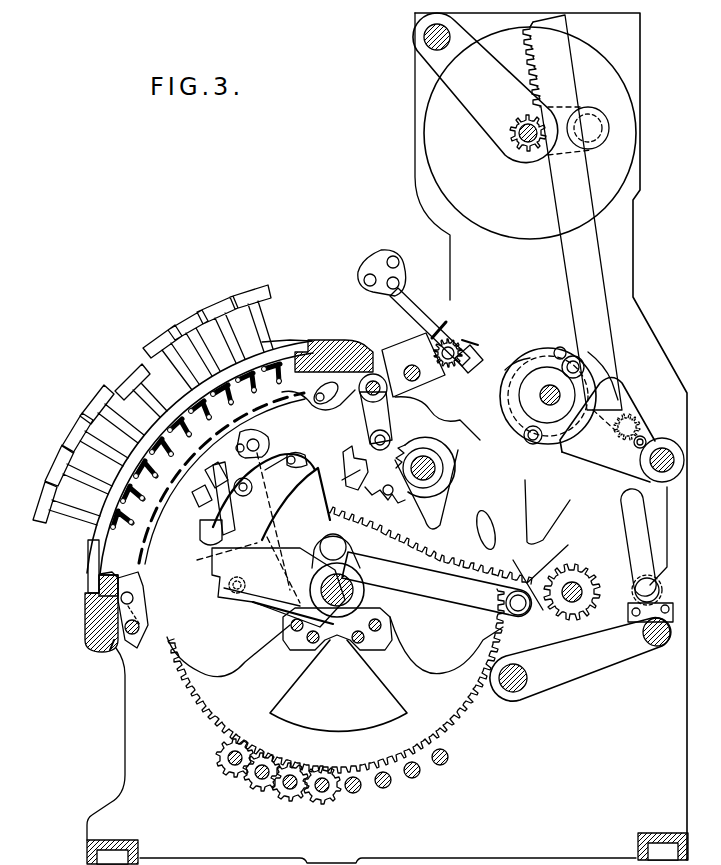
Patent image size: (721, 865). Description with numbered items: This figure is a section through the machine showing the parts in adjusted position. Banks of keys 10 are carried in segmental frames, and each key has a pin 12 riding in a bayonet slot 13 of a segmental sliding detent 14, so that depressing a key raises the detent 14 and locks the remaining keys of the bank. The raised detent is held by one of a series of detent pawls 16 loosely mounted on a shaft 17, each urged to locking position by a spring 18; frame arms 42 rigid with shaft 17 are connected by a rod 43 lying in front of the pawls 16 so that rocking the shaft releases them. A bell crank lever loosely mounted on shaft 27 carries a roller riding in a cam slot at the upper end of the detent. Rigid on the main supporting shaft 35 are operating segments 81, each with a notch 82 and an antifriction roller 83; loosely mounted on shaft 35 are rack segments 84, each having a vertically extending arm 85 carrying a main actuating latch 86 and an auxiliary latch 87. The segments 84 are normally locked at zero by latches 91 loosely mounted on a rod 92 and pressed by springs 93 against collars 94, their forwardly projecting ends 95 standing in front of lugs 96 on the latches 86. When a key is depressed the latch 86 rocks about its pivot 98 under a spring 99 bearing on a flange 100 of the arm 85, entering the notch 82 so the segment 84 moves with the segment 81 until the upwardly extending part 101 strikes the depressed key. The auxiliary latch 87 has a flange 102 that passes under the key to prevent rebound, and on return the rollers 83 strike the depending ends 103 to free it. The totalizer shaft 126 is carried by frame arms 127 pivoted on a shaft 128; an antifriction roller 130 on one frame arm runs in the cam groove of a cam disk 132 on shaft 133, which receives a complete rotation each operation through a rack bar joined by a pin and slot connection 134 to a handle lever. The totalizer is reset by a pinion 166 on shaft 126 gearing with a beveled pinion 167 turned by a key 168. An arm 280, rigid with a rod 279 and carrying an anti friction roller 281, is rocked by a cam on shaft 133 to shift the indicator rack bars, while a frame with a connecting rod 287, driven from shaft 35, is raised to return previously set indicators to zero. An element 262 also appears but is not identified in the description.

The banks of keys 10 is at (125, 373).
The pin 12 is at (268, 346).
The bayonet slot 13 is at (303, 348).
The segmental sliding detent 14 is at (118, 559).
The detent pawls 16 is at (144, 598).
The shaft 17 is at (137, 633).
The spring 18 is at (112, 648).
The shaft 27 is at (365, 398).
The main supporting shaft 35 is at (337, 606).
The frame arms 42 is at (122, 608).
The rod 43 is at (110, 590).
The operating segments 81 is at (278, 606).
The notch 82 is at (213, 590).
The antifriction roller 83 is at (245, 586).
The rack segments 84 is at (392, 688).
The vertically extending arm 85 is at (345, 520).
The main actuating latch 86 is at (278, 458).
The auxiliary latch 87 is at (196, 498).
The latches 91 is at (415, 442).
The rod 92 is at (424, 480).
The springs 93 is at (340, 482).
The collars 94 is at (368, 484).
The forwardly projecting ends 95 is at (350, 457).
The lugs 96 is at (305, 458).
The pivot 98 is at (252, 490).
The spring 99 is at (204, 532).
The flange 100 is at (202, 518).
The upwardly extending part 101 is at (260, 438).
The flange 102 is at (210, 478).
The depending ends 103 is at (215, 558).
The totalizer shaft 126 is at (400, 352).
The frame arms 127 is at (412, 365).
The shaft 128 is at (507, 342).
The antifriction roller 130 is at (560, 347).
The cam disk 132 is at (590, 350).
The shaft 133 is at (525, 398).
The pin and slot connection 134 is at (510, 375).
The pinion 166 is at (449, 339).
The beveled pinion 167 is at (470, 342).
The key 168 is at (407, 297).
The pin 262 is at (533, 445).
The rod 279 is at (662, 440).
The arm 280 is at (585, 458).
The anti friction roller 281 is at (582, 366).
The connecting rod 287 is at (659, 648).